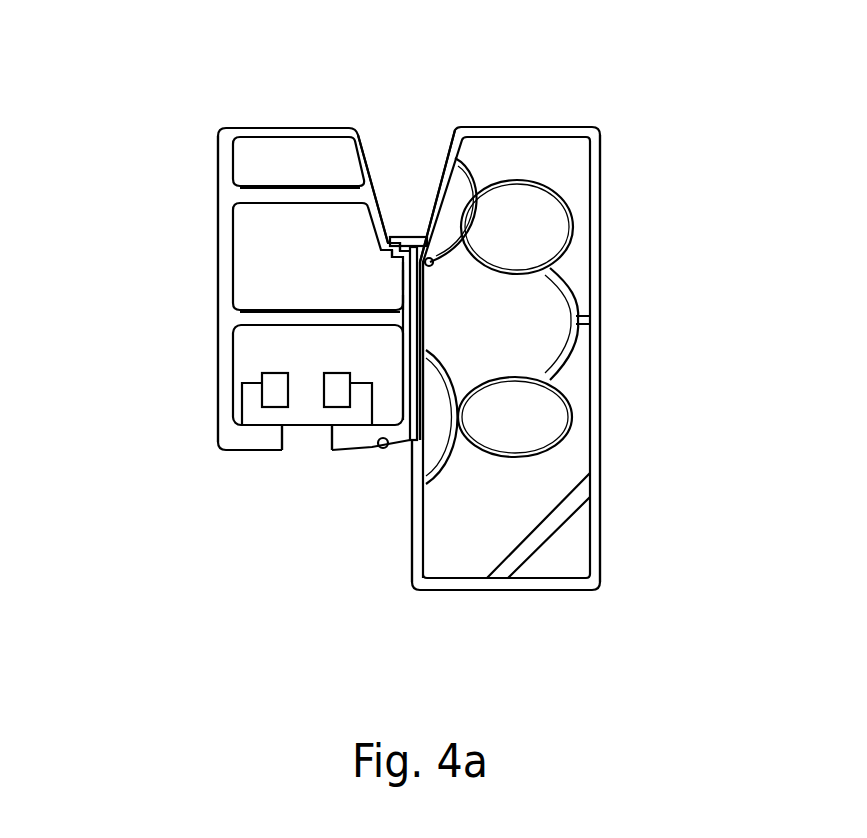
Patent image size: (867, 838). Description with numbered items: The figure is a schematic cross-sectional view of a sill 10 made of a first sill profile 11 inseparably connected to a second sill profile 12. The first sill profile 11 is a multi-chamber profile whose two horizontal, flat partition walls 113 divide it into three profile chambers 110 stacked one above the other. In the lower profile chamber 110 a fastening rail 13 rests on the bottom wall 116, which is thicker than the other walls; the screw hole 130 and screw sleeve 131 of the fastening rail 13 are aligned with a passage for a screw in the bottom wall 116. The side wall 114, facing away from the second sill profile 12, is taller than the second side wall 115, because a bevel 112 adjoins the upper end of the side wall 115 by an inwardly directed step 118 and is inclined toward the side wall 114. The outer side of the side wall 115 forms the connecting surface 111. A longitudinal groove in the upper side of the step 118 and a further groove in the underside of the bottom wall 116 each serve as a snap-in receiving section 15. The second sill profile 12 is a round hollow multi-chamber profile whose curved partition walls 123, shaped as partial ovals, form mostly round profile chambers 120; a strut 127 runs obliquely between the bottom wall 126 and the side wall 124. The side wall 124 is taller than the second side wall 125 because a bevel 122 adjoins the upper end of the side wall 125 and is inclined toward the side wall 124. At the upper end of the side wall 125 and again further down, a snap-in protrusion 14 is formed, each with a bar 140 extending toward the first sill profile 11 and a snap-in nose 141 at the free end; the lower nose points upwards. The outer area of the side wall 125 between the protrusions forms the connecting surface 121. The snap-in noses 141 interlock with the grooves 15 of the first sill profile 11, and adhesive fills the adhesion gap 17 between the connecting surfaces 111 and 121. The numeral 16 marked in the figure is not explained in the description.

The sill 10 is at (149, 148).
The first sill profile 11 is at (102, 287).
The second sill profile 12 is at (634, 134).
The fastening rail 13 is at (248, 425).
The snap-in protrusion 14 is at (442, 176).
The snap-in receiving section 15 is at (393, 255).
The gap 16 is at (393, 132).
The adhesion gap 17 is at (405, 301).
The profile chamber 110 is at (344, 174).
The connecting surface 111 is at (405, 336).
The bevel 112 is at (378, 172).
The partition wall 113 is at (295, 197).
The side wall 114 is at (218, 220).
The second side wall 115 is at (405, 283).
The bottom wall 116 is at (265, 452).
The step 118 is at (393, 262).
The profile chamber 120 is at (537, 239).
The connecting surface 121 is at (427, 318).
The bevel 122 is at (419, 221).
The partition wall 123 is at (560, 200).
The side wall 124 is at (596, 242).
The second side wall 125 is at (413, 576).
The bottom wall 126 is at (455, 592).
The strut 127 is at (556, 527).
The screw hole 130 is at (284, 446).
The screw sleeve 131 is at (272, 385).
The bar 140 is at (395, 238).
The snap-in nose 141 is at (430, 268).